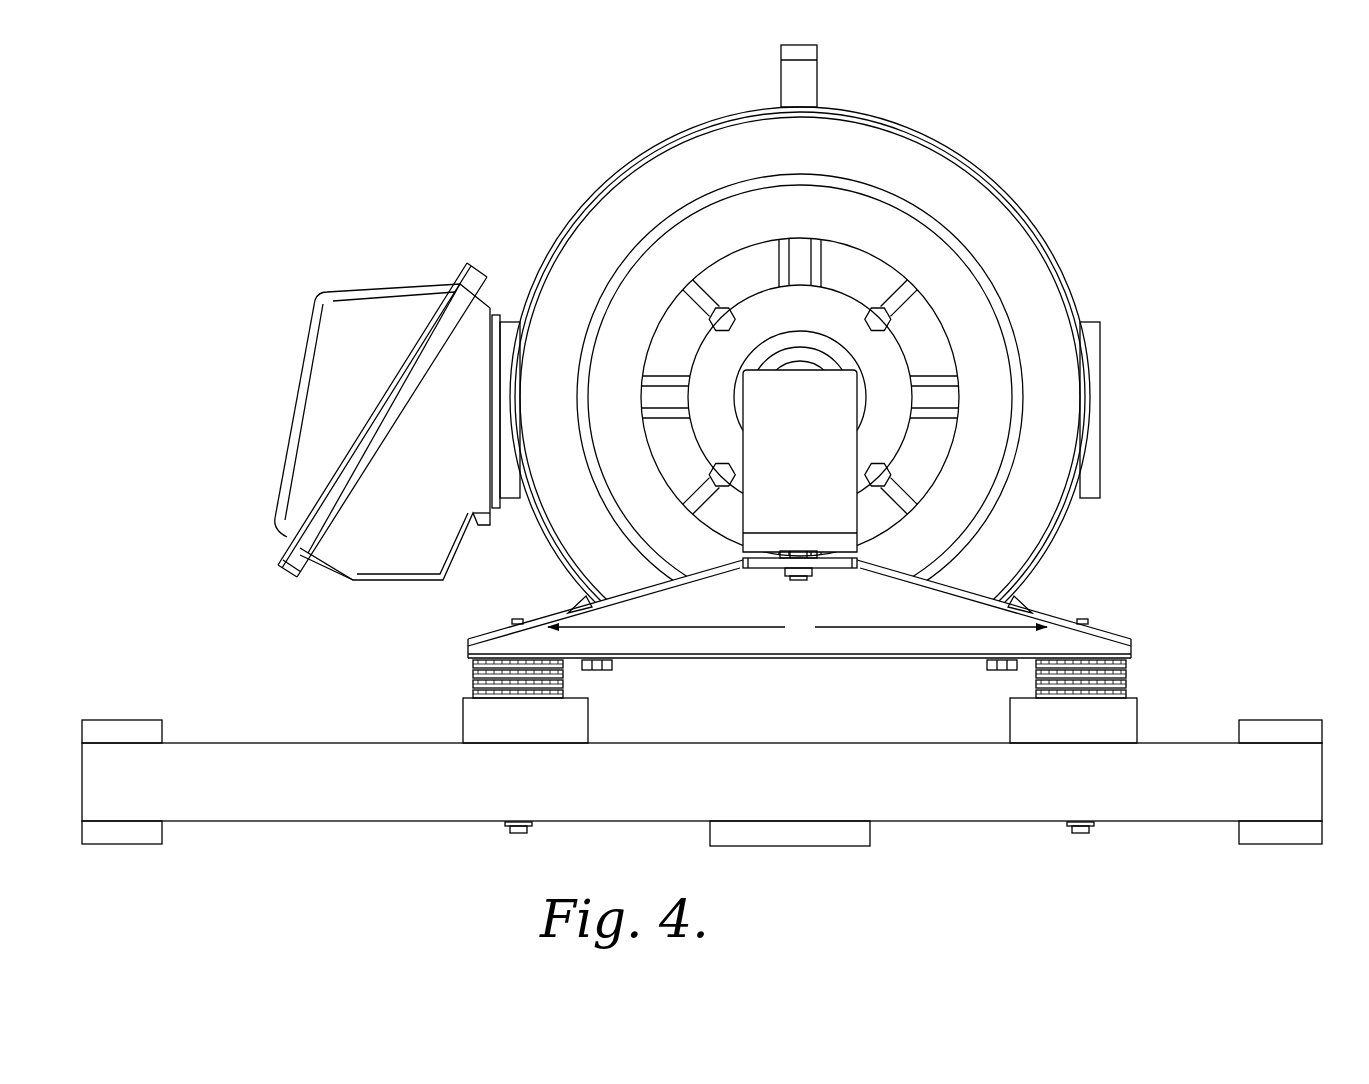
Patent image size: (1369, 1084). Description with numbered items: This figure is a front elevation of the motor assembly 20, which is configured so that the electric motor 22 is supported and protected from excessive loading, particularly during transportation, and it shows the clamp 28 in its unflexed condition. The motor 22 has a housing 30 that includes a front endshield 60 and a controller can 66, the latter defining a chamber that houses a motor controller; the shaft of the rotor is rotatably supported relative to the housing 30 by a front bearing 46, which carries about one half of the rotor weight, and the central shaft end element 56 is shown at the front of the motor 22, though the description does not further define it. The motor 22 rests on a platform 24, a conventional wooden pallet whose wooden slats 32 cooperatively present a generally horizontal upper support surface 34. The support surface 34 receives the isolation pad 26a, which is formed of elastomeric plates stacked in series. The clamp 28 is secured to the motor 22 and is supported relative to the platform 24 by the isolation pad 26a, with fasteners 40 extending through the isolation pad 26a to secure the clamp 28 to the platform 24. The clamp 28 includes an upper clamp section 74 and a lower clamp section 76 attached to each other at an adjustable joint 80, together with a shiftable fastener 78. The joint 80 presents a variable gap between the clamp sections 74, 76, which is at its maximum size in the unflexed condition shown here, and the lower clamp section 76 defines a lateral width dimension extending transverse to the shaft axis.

The motor assembly 20 is at (1062, 135).
The electric motor 22 is at (1040, 265).
The front endshield 60 is at (742, 128).
The housing 30 is at (860, 135).
The front bearing 46 is at (838, 308).
The shaft nut 56 is at (801, 392).
The upper clamp section 74 is at (820, 456).
The shiftable fastener 78 is at (790, 580).
The adjustable joint 80 is at (905, 552).
The lower clamp section 76 is at (1010, 607).
The clamp 28 is at (950, 650).
The isolation pad 26a is at (470, 680).
The upper support surface 34 is at (590, 686).
The wooden slats 32 is at (490, 722).
The platform 24 is at (245, 797).
The fasteners 40 is at (512, 836).
The controller can 66 is at (330, 355).